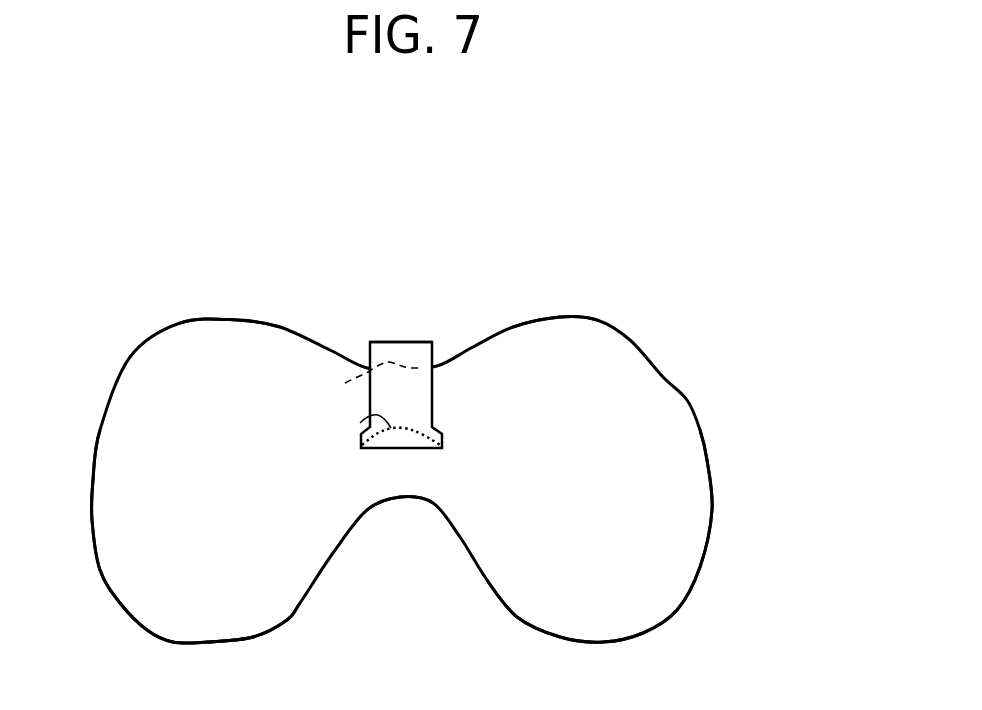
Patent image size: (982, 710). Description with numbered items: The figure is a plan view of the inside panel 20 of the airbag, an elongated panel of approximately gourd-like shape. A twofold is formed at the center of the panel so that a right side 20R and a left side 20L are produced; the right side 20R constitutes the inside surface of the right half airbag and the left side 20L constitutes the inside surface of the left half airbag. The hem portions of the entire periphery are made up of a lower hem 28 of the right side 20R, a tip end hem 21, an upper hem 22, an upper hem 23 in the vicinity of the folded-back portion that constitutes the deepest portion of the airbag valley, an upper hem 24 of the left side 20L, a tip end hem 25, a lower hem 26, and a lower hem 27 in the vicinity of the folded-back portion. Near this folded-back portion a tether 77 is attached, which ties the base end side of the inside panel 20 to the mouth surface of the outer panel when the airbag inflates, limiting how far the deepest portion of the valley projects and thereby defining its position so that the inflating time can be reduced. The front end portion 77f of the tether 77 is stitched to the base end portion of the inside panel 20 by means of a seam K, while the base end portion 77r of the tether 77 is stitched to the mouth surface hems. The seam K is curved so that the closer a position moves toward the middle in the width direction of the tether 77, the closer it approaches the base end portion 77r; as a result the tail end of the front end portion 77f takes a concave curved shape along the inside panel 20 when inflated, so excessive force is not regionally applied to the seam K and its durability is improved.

The inside panel 20 is at (618, 294).
The left side 20L is at (195, 612).
The right side 20R is at (627, 606).
The tip end hem 21 is at (708, 460).
The upper hem 22 is at (558, 316).
The upper hem 23 is at (345, 383).
The upper hem 24 is at (237, 319).
The tip end hem 25 is at (92, 500).
The lower hem 26 is at (233, 640).
The lower hem 27 is at (403, 498).
The lower hem 28 is at (518, 617).
The tether 77 is at (423, 395).
The base end portion 77r is at (398, 347).
The front end portion 77f is at (413, 440).
The seam K is at (360, 423).